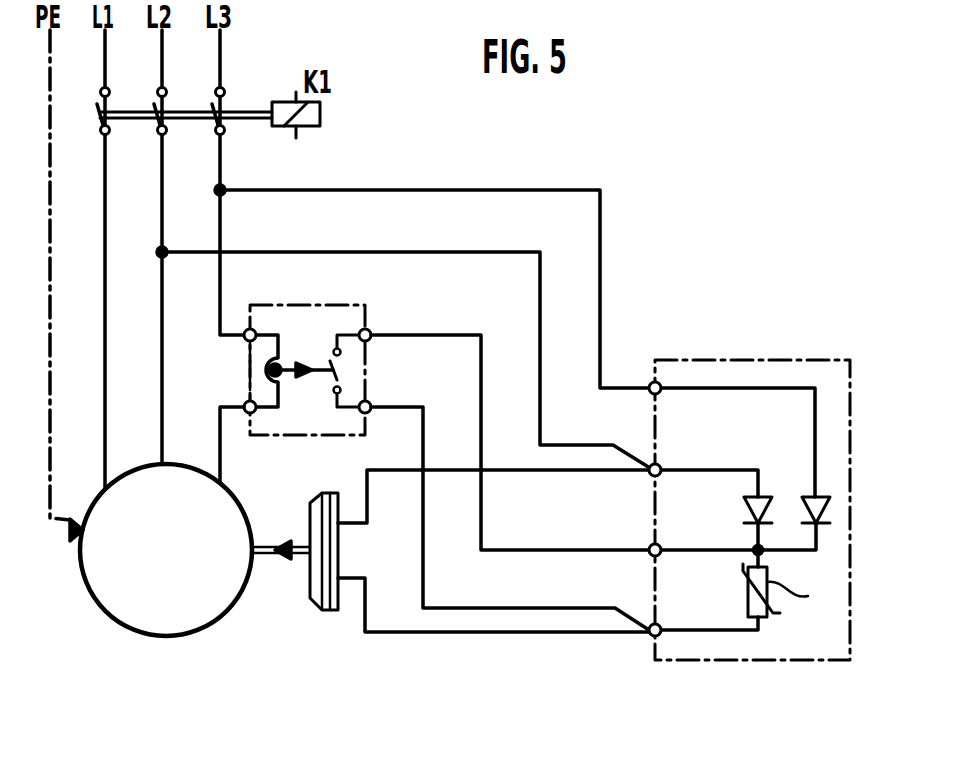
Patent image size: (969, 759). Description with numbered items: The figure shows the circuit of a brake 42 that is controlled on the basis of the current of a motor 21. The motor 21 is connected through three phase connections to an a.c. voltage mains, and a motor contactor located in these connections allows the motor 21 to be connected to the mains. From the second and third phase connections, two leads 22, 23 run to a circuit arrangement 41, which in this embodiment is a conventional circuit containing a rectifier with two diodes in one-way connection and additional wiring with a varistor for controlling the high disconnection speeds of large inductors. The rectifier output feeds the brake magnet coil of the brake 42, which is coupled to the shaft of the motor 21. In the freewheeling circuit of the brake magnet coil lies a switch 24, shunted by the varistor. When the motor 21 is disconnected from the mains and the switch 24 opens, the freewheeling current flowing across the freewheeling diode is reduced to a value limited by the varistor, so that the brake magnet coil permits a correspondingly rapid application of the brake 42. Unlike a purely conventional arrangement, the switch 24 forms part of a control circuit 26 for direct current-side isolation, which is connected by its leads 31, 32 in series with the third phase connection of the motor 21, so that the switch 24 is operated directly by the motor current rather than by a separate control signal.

The motor 21 is at (108, 592).
The lead 22 is at (465, 188).
The lead 23 is at (465, 250).
The switch 24 is at (350, 363).
The control circuit 26 is at (312, 415).
The lead 31 is at (324, 381).
The lead 32 is at (248, 415).
The circuit arrangement 41 is at (828, 437).
The brake 42 is at (272, 652).